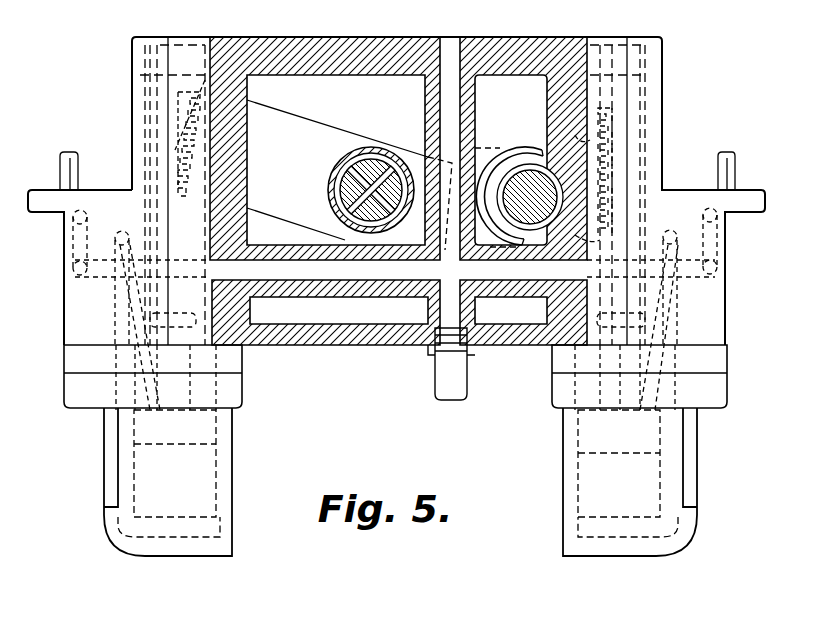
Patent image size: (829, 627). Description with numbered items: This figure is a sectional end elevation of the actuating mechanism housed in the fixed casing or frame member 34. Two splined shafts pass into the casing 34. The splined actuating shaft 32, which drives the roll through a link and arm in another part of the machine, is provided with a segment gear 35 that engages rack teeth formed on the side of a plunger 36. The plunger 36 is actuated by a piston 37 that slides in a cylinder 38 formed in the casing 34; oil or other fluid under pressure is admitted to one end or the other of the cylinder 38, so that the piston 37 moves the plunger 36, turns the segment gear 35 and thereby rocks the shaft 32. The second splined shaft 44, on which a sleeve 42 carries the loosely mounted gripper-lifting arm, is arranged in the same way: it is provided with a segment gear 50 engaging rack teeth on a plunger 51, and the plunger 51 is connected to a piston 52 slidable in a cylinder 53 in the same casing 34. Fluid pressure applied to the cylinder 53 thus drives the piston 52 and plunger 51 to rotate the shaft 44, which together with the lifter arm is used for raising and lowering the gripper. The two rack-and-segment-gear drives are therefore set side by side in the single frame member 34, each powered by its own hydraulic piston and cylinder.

The splined actuating shaft 32 is at (527, 193).
The fixed casing or frame member 34 is at (521, 52).
The segment gear 35 is at (596, 140).
The plunger 36 is at (630, 126).
The piston 37 is at (635, 452).
The cylinder 38 is at (582, 490).
The sleeve 42 is at (345, 188).
The second splined shaft 44 is at (375, 176).
The segment gear 50 is at (275, 113).
The plunger 51 is at (162, 107).
The piston 52 is at (160, 440).
The cylinder 53 is at (136, 495).